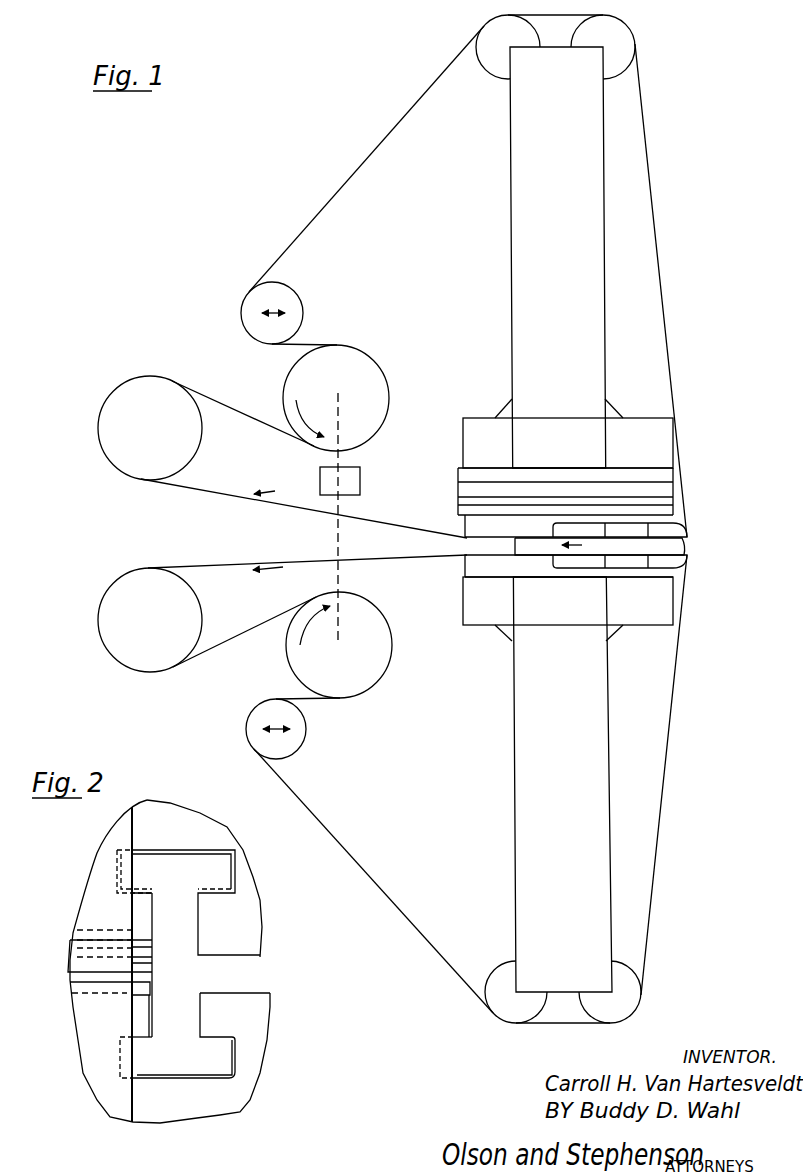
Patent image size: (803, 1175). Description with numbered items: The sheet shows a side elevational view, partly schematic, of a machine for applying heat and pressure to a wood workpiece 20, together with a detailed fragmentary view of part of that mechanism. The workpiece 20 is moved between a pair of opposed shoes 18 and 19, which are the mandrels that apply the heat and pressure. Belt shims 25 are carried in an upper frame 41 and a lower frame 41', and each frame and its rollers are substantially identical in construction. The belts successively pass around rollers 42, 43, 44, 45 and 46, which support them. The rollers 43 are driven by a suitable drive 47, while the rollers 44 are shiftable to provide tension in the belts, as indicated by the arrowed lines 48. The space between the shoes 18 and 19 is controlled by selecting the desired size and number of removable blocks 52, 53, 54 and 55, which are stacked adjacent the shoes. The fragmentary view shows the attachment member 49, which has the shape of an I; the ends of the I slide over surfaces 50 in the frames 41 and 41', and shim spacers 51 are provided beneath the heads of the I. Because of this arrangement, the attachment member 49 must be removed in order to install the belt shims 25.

In FIG. 1, the shoe 18 is at (540, 536).
In FIG. 1, the shoe 19 is at (540, 573).
In FIG. 1, the wood workpiece 20 is at (676, 548).
In FIG. 1, the belt shims 25 is at (670, 353).
In FIG. 1, the upper frame 41 is at (568, 257).
In FIG. 2, the upper frame 41 is at (200, 940).
In FIG. 1, the lower frame 41' is at (568, 784).
In FIG. 2, the lower frame 41' is at (217, 1035).
In FIG. 1, the roller 42 is at (190, 450).
In FIG. 1, the roller 43 is at (373, 373).
In FIG. 1, the roller 44 is at (303, 311).
In FIG. 1, the roller 45 is at (492, 34).
In FIG. 1, the roller 46 is at (624, 44).
In FIG. 1, the drive 47 is at (362, 483).
In FIG. 1, the arrowed lines 48 is at (276, 312).
In FIG. 2, the attachment member 49 is at (185, 977).
In FIG. 2, the surfaces 50 is at (227, 888).
In FIG. 2, the shim spacers 51 is at (210, 894).
In FIG. 1, the removable block 52 is at (675, 511).
In FIG. 1, the removable block 53 is at (674, 500).
In FIG. 1, the removable block 54 is at (672, 489).
In FIG. 1, the removable block 55 is at (676, 472).